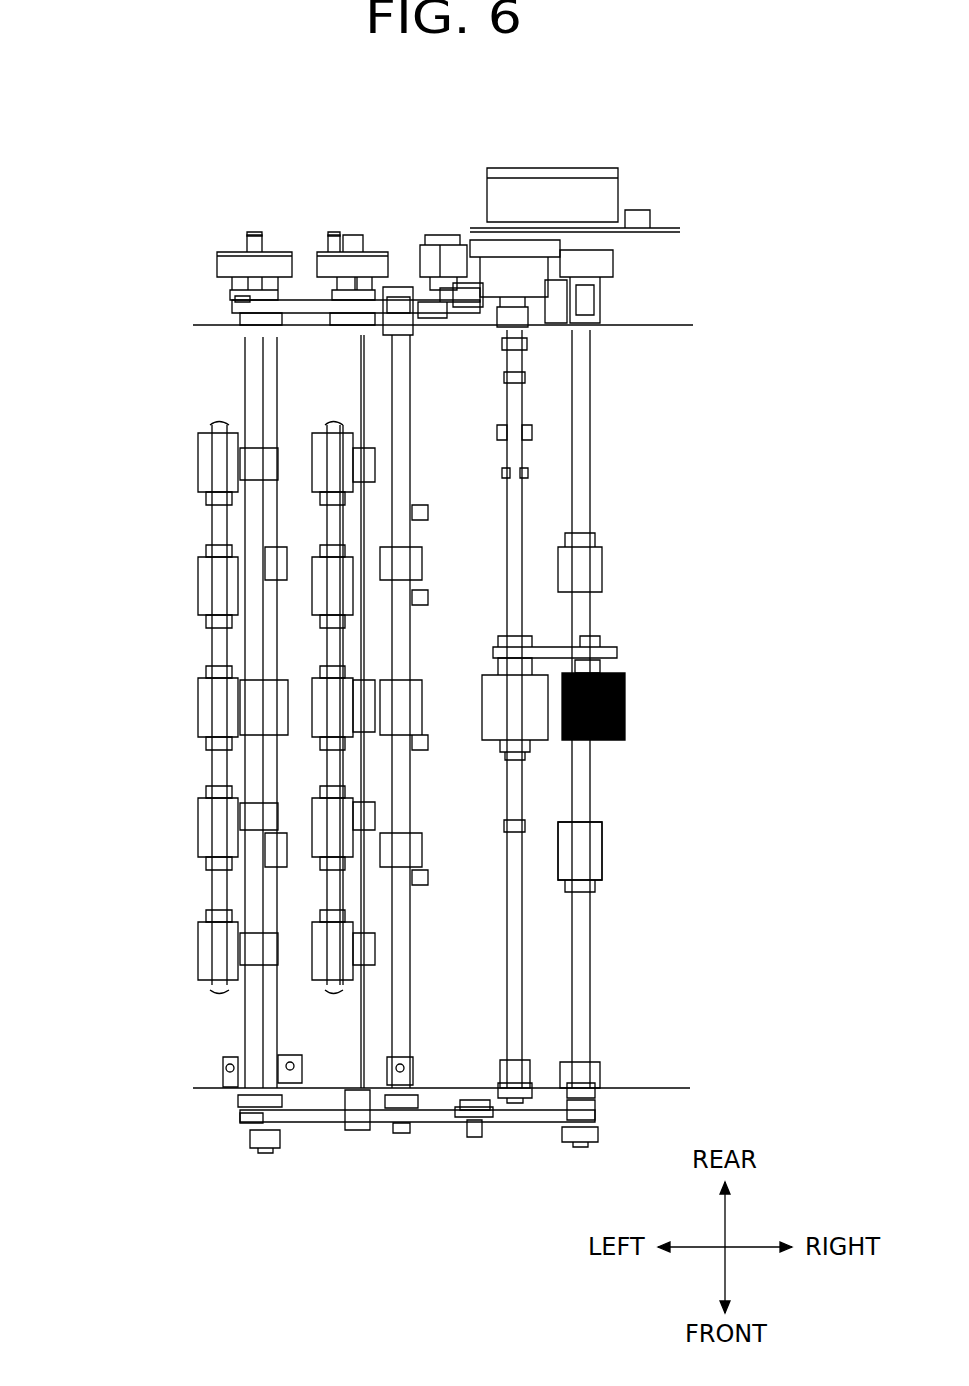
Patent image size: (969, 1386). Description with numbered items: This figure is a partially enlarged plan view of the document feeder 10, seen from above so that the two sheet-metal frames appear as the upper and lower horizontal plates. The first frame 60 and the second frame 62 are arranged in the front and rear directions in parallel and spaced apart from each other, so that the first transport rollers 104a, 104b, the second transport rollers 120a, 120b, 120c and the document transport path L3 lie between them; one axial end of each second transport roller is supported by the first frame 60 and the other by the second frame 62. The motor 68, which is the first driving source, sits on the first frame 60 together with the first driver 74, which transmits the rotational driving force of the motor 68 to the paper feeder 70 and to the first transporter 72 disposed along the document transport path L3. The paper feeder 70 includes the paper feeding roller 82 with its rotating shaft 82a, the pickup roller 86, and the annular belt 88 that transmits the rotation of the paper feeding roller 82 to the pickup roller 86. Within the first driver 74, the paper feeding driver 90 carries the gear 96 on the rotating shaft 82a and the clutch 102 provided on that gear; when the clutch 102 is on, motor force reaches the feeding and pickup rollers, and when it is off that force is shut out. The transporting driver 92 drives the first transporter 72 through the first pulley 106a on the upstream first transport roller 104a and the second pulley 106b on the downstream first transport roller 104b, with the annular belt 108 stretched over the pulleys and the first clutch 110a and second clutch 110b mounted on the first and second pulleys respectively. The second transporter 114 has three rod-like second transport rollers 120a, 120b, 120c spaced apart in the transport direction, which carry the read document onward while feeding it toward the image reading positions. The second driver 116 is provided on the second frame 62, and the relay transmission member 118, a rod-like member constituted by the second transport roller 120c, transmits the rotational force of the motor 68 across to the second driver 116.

The document feeder 10 is at (690, 188).
The first frame 60 is at (198, 325).
The second frame 62 is at (198, 1095).
The motor 68 is at (573, 193).
The paper feeder 70 is at (630, 695).
The first transporter 72 is at (318, 525).
The first driver 74 is at (348, 190).
The paper feeding roller 82 is at (530, 720).
The rotating shaft 82a is at (510, 490).
The pickup roller 86 is at (627, 725).
The annular belt 88 is at (547, 658).
The paper feeding driver 90 is at (440, 228).
The transporting driver 92 is at (248, 230).
The gear 96 is at (547, 287).
The clutch 102 is at (500, 268).
The first transport roller 104a is at (372, 600).
The first transport roller 104b is at (258, 702).
The first pulley 106a is at (345, 296).
The second pulley 106b is at (245, 302).
The annular belt 108 is at (308, 305).
The first clutch 110a is at (372, 252).
The second clutch 110b is at (237, 263).
The second transporter 114 is at (445, 928).
The second driver 116 is at (418, 1135).
The relay transmission member 118 is at (597, 878).
The second transport roller 120a is at (278, 855).
The second transport roller 120b is at (405, 848).
The second transport roller 120c is at (580, 851).
The document transport path L3 is at (212, 655).